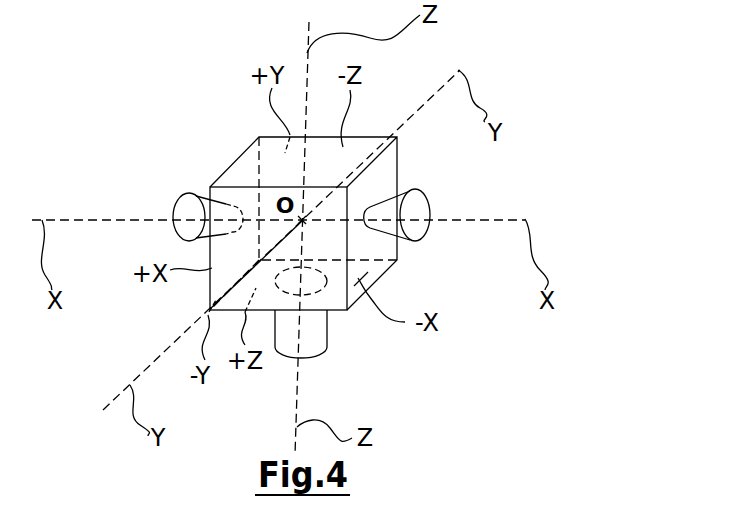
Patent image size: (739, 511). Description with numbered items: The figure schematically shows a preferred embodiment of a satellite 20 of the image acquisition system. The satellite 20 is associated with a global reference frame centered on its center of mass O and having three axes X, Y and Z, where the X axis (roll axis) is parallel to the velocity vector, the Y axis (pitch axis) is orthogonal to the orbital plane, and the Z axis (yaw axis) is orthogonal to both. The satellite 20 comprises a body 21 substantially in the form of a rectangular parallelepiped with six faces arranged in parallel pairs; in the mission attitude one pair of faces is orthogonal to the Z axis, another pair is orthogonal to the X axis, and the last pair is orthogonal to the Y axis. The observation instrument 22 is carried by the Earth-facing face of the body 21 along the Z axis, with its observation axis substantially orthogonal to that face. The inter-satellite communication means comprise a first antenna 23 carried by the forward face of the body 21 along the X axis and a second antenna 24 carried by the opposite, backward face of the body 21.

The satellite 20 is at (226, 106).
The body 21 is at (385, 270).
The observation instrument 22 is at (327, 333).
The first antenna 23 is at (175, 202).
The second antenna 24 is at (418, 190).